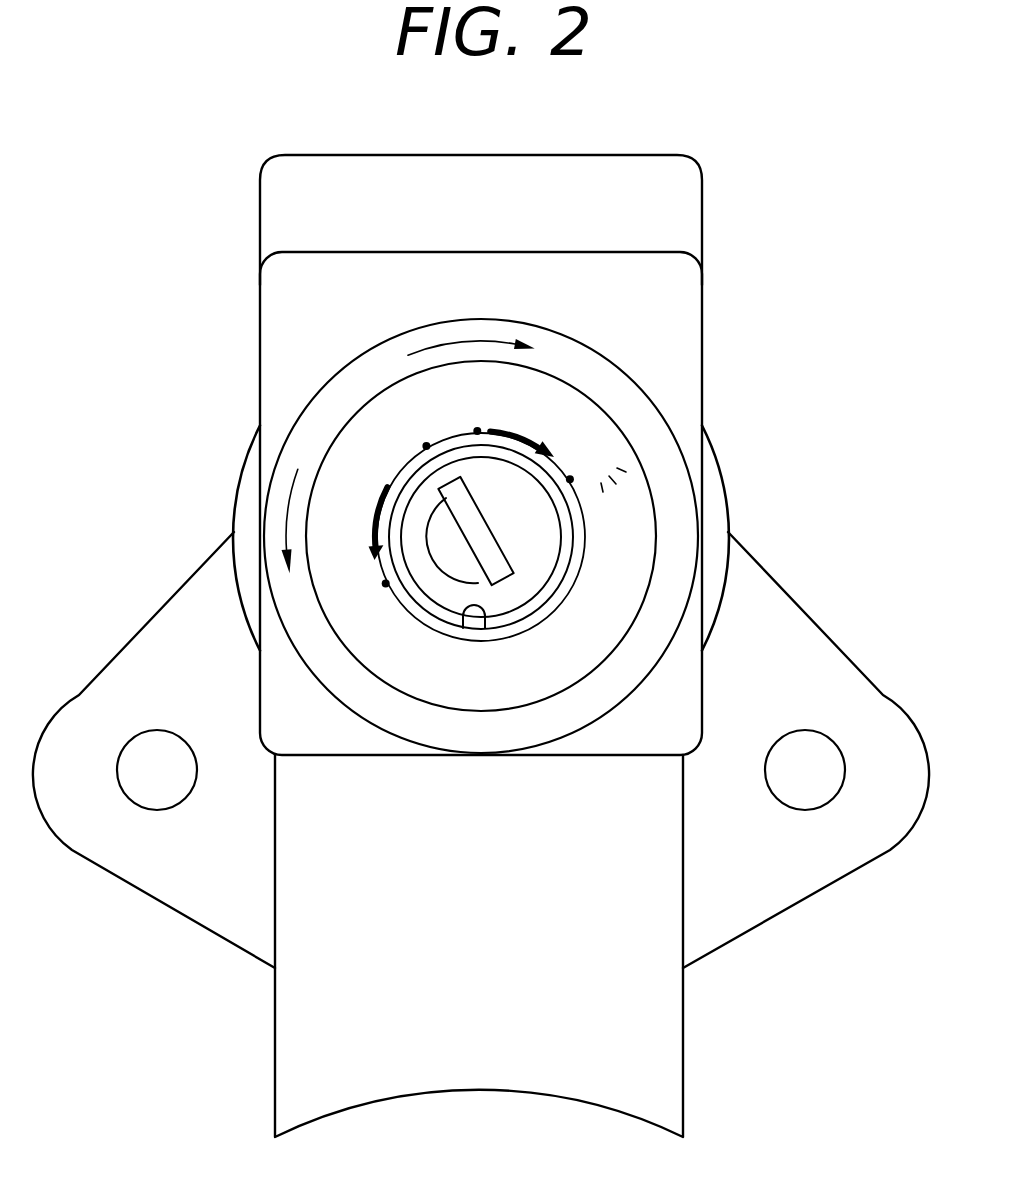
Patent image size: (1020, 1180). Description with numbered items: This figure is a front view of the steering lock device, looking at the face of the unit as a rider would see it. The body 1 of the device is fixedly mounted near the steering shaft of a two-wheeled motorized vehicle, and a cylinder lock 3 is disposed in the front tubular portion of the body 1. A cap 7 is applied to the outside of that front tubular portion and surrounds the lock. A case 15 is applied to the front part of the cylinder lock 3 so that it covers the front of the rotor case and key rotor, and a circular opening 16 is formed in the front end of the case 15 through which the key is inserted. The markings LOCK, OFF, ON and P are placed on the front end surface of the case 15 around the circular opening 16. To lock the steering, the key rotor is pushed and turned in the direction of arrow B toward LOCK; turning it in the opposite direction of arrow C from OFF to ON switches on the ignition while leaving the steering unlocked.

The body 1 is at (822, 614).
The cylinder lock 3 is at (340, 420).
The cap 7 is at (673, 318).
The case 15 is at (640, 538).
The circular opening 16 is at (483, 612).
The arrow B is at (284, 517).
The arrow C is at (446, 343).